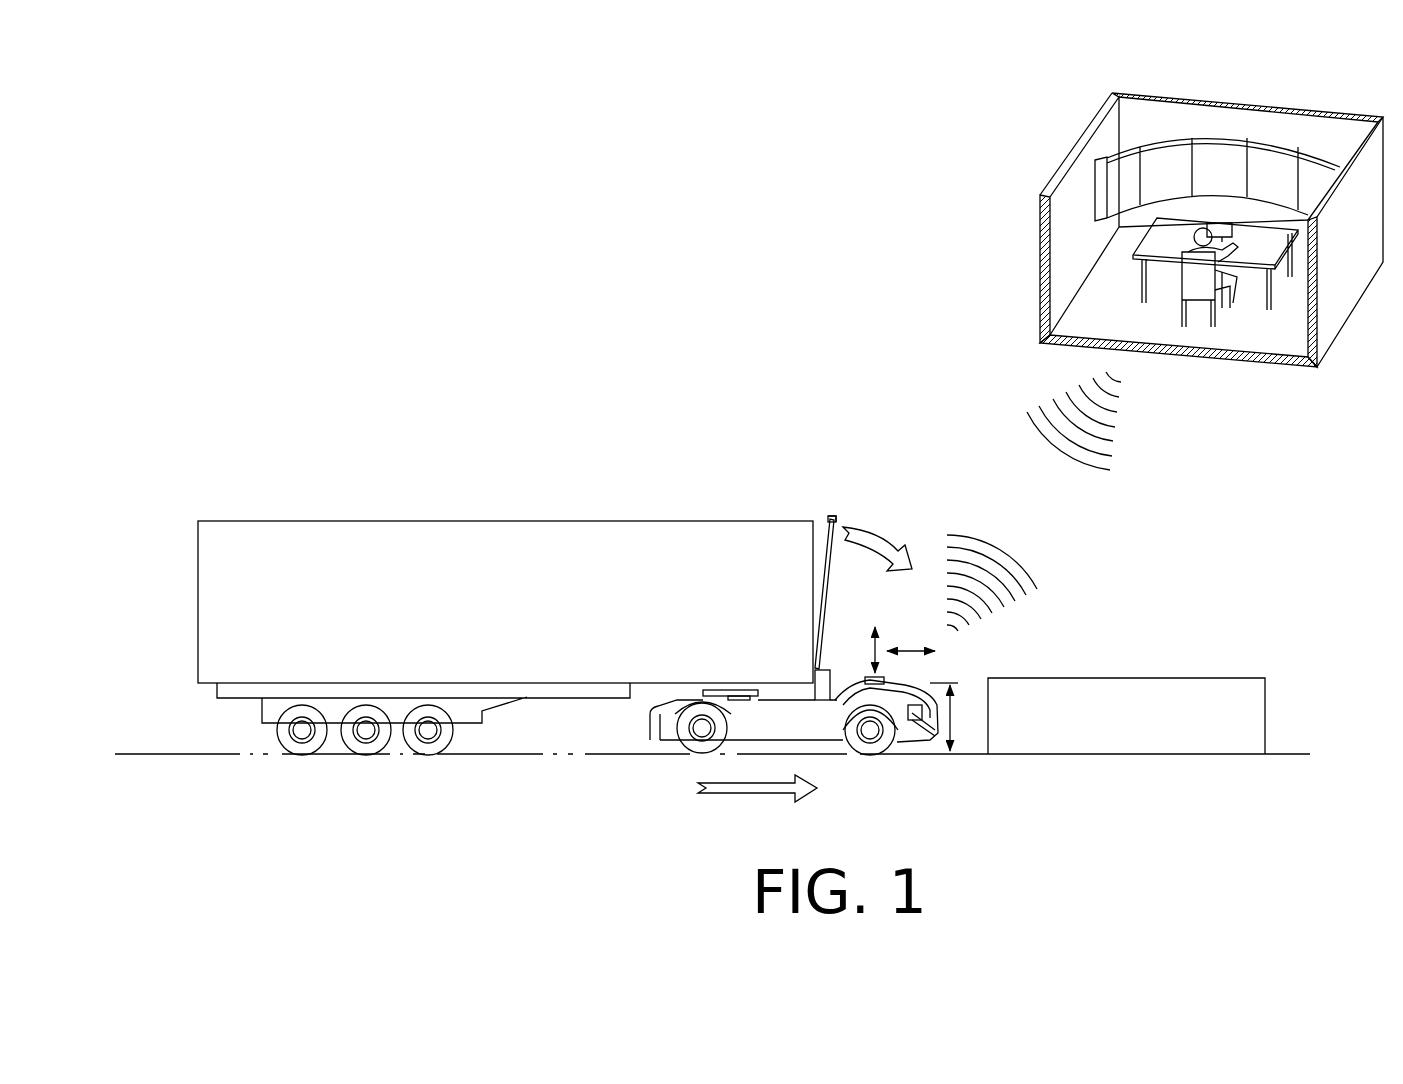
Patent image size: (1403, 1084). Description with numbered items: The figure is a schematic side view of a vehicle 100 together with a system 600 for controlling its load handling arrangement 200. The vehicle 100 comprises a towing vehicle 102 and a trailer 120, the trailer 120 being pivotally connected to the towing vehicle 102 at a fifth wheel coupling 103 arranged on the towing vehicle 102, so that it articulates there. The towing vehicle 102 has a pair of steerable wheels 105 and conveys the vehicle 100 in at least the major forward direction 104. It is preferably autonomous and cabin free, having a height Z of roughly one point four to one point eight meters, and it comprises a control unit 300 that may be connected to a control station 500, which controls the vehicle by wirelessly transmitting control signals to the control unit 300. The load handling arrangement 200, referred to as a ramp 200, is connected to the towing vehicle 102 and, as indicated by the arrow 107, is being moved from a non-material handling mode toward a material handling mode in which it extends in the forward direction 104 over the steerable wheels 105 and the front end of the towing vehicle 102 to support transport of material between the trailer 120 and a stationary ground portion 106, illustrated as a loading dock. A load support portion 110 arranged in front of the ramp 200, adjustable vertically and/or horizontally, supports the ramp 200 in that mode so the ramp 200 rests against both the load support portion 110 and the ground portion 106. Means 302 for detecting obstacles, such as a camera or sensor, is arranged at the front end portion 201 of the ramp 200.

The vehicle 100 is at (523, 333).
The trailer 120 is at (402, 502).
The fifth wheel coupling 103 is at (732, 694).
The load handling arrangement 200 is at (822, 580).
The means for detecting obstacles 302 is at (842, 520).
The front end portion 201 is at (840, 518).
The arrow 107 is at (880, 540).
The load support portion 110 is at (868, 675).
The towing vehicle 102 is at (1043, 560).
The stationary ground portion 106 is at (1102, 698).
The major forward direction 104 is at (752, 795).
The steerable wheels 105 is at (870, 731).
The control unit 300 is at (916, 722).
The control station 500 is at (1027, 138).
The system 600 is at (598, 225).
The height Z is at (955, 718).